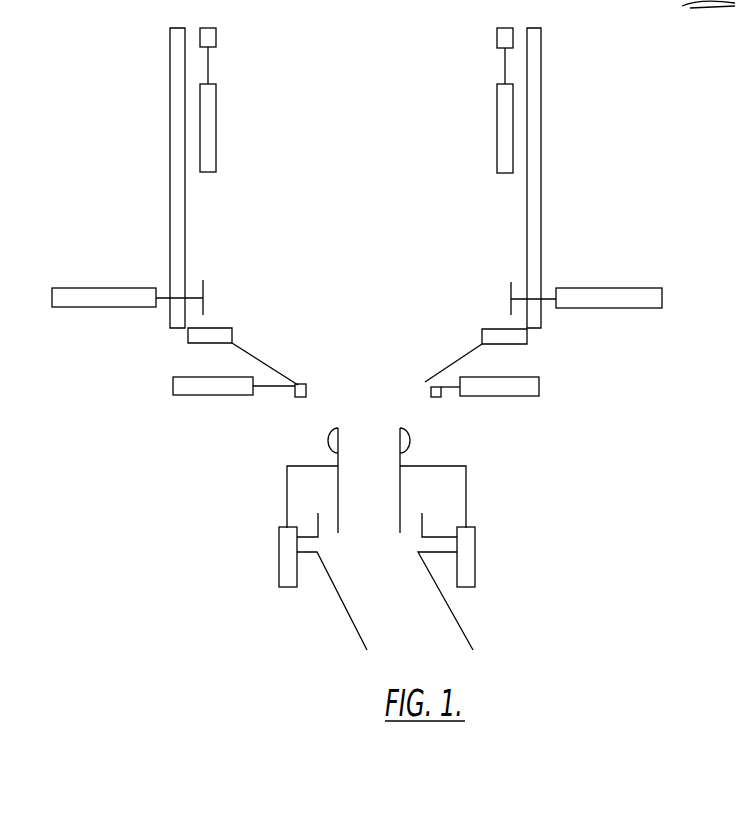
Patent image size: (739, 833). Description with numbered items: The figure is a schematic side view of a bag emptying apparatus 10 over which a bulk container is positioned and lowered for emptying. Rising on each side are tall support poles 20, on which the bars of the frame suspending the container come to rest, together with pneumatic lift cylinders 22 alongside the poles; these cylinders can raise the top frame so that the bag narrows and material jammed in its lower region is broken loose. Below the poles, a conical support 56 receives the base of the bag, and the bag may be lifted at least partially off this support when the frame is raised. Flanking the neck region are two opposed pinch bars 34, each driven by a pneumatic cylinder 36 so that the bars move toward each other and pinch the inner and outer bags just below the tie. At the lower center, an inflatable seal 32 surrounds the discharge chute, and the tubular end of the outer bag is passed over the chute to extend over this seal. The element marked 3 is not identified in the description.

The bag emptying apparatus 10 is at (537, 497).
The support poles 20 is at (170, 102).
The pneumatic lift cylinders 22 is at (205, 130).
The block 3 is at (586, 287).
The conical support 56 is at (455, 361).
The pneumatic cylinders 36 is at (207, 397).
The pinch bars 34 is at (298, 398).
The inflatable seal 32 is at (410, 440).